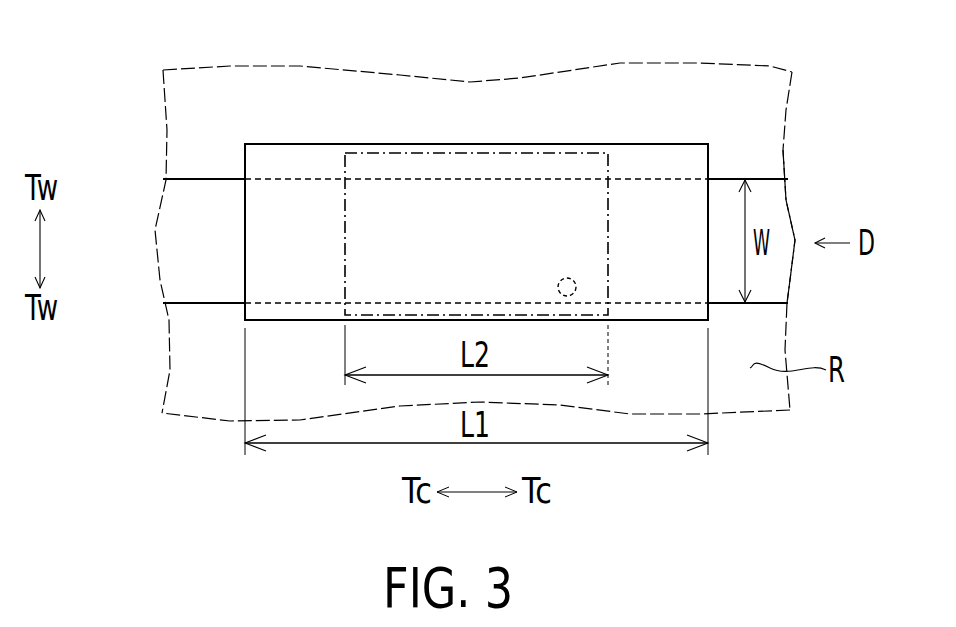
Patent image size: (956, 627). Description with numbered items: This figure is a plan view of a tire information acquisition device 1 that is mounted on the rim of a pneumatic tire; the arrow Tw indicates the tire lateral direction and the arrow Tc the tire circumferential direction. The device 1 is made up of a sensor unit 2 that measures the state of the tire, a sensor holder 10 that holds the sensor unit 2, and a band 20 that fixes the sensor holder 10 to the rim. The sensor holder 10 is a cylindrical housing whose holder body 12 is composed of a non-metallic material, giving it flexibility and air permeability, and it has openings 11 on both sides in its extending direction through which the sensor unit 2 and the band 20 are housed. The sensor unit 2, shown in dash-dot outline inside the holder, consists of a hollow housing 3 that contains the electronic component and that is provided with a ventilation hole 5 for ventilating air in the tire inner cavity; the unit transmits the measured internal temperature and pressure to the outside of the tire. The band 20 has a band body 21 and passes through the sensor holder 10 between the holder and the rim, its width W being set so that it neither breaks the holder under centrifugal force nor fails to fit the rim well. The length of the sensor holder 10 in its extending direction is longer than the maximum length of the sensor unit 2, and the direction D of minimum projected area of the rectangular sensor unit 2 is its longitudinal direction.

The tire information acquisition device 1 is at (415, 132).
The sensor holder 10 is at (262, 142).
The openings 11 is at (245, 232).
The holder body 12 is at (320, 160).
The sensor unit 2 is at (478, 152).
The housing 3 is at (540, 168).
The ventilation hole 5 is at (571, 296).
The band 20 is at (755, 178).
The band body 21 is at (782, 212).